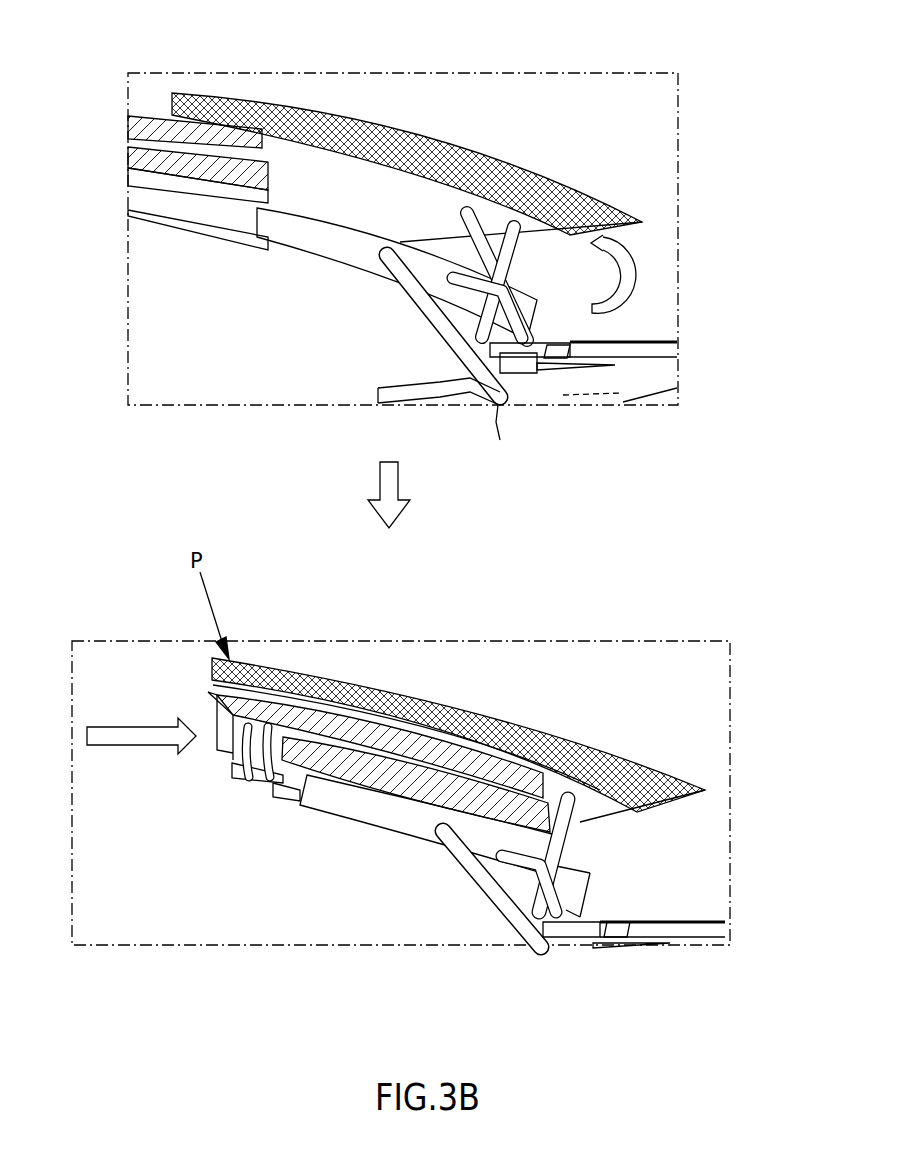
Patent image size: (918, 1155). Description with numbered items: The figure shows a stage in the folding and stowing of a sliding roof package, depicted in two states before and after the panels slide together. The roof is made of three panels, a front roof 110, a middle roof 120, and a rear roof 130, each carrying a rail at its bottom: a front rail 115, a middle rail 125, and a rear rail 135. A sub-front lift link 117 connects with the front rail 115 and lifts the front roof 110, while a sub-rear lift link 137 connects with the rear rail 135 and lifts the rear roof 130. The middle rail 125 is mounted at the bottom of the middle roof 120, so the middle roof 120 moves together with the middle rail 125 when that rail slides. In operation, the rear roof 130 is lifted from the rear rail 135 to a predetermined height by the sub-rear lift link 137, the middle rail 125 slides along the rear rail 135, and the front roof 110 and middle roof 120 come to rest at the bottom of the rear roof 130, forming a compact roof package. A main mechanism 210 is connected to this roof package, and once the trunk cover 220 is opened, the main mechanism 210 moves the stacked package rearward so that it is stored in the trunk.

The front roof 110 is at (145, 127).
The front rail 115 is at (287, 783).
The sub-front lift link 117 is at (257, 772).
The middle roof 120 is at (263, 170).
The middle rail 125 is at (182, 208).
The rear roof 130 is at (385, 145).
The rear rail 135 is at (310, 238).
The sub-rear lift link 137 is at (513, 212).
The main mechanism 210 is at (543, 377).
The trunk cover 220 is at (657, 342).